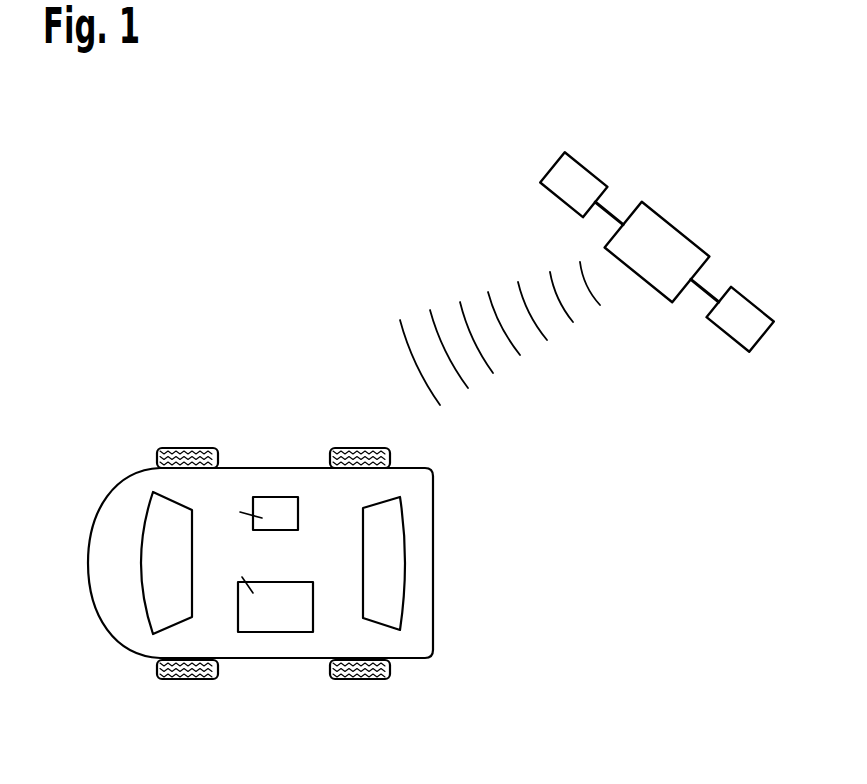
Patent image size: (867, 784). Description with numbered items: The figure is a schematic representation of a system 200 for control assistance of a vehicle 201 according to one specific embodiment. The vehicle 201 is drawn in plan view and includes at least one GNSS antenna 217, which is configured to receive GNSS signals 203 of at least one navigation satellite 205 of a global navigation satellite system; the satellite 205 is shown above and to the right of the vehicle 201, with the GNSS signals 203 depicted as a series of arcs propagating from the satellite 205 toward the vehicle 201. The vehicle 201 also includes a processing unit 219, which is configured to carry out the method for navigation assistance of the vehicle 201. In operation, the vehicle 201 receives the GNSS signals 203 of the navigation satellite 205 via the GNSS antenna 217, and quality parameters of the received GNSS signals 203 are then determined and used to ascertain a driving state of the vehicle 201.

The system for control assistance 200 is at (255, 262).
The vehicle 201 is at (433, 563).
The GNSS signals 203 is at (567, 316).
The navigation satellite 205 is at (677, 227).
The GNSS antenna 217 is at (278, 498).
The processing unit 219 is at (273, 632).